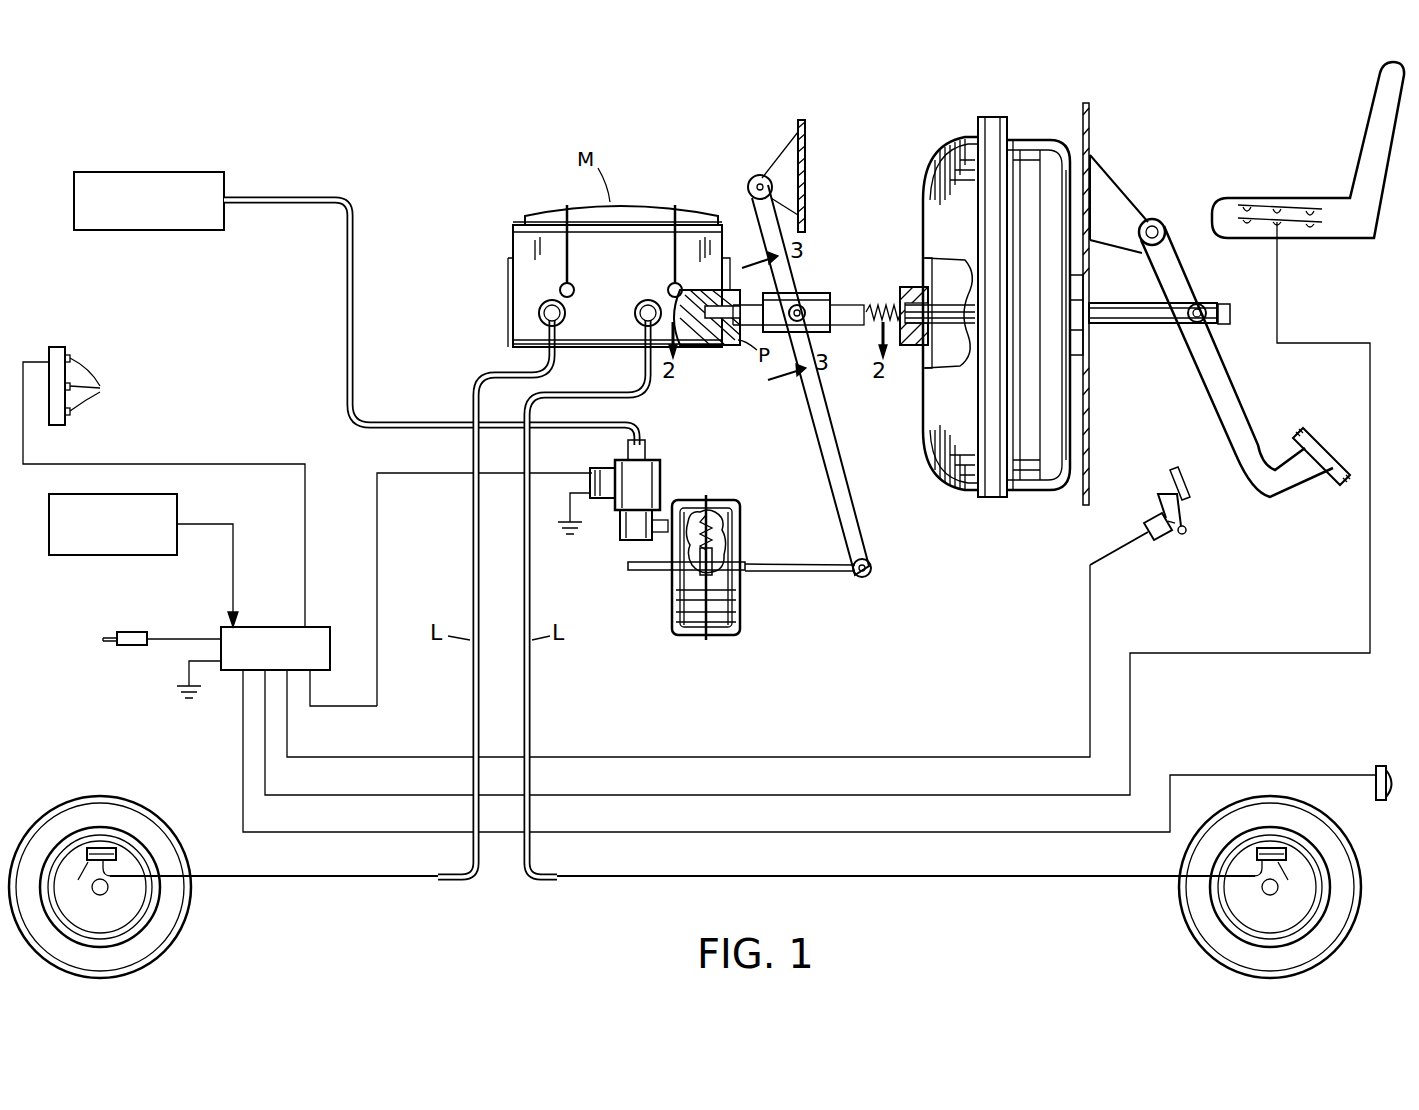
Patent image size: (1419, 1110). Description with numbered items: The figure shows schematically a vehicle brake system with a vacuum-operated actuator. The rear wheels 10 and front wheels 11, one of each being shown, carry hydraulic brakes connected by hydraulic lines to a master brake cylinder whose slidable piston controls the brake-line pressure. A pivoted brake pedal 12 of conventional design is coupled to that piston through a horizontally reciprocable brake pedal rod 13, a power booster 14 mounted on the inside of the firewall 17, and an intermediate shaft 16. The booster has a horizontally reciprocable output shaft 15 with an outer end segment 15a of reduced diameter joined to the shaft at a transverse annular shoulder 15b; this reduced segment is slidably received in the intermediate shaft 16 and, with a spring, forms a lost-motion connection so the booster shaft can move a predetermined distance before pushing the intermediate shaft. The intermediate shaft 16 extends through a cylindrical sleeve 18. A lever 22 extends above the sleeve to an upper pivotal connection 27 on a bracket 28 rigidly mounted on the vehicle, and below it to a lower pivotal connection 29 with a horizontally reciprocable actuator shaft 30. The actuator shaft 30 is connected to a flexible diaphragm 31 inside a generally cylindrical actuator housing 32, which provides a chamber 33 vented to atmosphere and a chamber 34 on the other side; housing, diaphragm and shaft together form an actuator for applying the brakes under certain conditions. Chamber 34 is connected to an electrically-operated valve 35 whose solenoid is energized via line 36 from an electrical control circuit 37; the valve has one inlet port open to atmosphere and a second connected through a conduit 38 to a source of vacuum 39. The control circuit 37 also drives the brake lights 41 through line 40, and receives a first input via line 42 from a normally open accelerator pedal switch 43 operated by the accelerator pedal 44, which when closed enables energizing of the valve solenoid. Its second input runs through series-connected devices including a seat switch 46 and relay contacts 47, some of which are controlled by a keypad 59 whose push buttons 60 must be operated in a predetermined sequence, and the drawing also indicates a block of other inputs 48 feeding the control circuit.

The rear wheels 10 is at (1180, 893).
The front wheels 11 is at (188, 905).
The brake pedal 12 is at (1232, 408).
The brake pedal rod 13 is at (1120, 325).
The power booster 14 is at (923, 220).
The output shaft 15 is at (947, 310).
The outer end segment 15a is at (897, 305).
The transverse annular shoulder 15b is at (902, 292).
The intermediate shaft 16 is at (846, 323).
The firewall 17 is at (1089, 447).
The cylindrical sleeve 18 is at (814, 290).
The lever 22 is at (845, 491).
The pivotal connection 27 is at (748, 187).
The bracket 28 is at (781, 158).
The pivotal connection 29 is at (873, 568).
The actuator shaft 30 is at (806, 574).
The flexible diaphragm 31 is at (712, 525).
The actuator housing 32 is at (712, 497).
The chamber 33 is at (740, 540).
The chamber 34 is at (695, 560).
The electrically-operated valve 35 is at (664, 470).
The line 36 is at (380, 563).
The electrical control circuit 37 is at (276, 627).
The conduit 38 is at (583, 428).
The source of vacuum 39 is at (156, 172).
The line 40 is at (851, 834).
The brake lights 41 is at (1376, 772).
The line 42 is at (1130, 547).
The accelerator pedal switch 43 is at (1156, 542).
The accelerator pedal 44 is at (1186, 526).
The seat switch 46 is at (1266, 203).
The relay contacts 47 is at (141, 632).
The other inputs 48 is at (89, 555).
The keypad 59 is at (60, 347).
The push buttons 60 is at (98, 385).